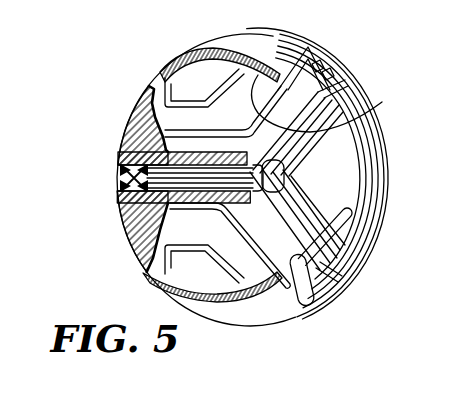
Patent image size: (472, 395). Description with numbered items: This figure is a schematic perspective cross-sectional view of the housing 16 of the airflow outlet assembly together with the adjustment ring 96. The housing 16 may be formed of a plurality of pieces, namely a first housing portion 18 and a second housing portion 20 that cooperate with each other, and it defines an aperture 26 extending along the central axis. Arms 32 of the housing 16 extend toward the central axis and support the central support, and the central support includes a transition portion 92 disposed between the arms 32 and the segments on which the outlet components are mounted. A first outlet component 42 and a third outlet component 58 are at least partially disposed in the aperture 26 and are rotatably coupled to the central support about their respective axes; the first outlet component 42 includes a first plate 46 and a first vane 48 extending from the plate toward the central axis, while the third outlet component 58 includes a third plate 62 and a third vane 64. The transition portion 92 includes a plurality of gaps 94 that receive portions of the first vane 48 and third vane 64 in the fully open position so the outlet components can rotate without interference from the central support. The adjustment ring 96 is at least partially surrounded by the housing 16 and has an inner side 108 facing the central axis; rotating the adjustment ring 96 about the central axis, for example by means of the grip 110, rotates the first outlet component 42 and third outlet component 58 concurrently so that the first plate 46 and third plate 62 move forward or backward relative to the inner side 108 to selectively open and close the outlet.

The housing 16 is at (206, 180).
The first housing portion 18 is at (197, 44).
The second housing portion 20 is at (243, 40).
The aperture 26 is at (351, 177).
The arms 32 is at (130, 108).
The first outlet component 42 is at (346, 97).
The first plate 46 is at (328, 78).
The first vane 48 is at (318, 58).
The third outlet component 58 is at (334, 256).
The third plate 62 is at (330, 276).
The third vane 64 is at (286, 238).
The transition portion 92 is at (200, 155).
The gaps 94 is at (127, 186).
The adjustment ring 96 is at (140, 83).
The inner side 108 is at (306, 126).
The grip 110 is at (296, 296).